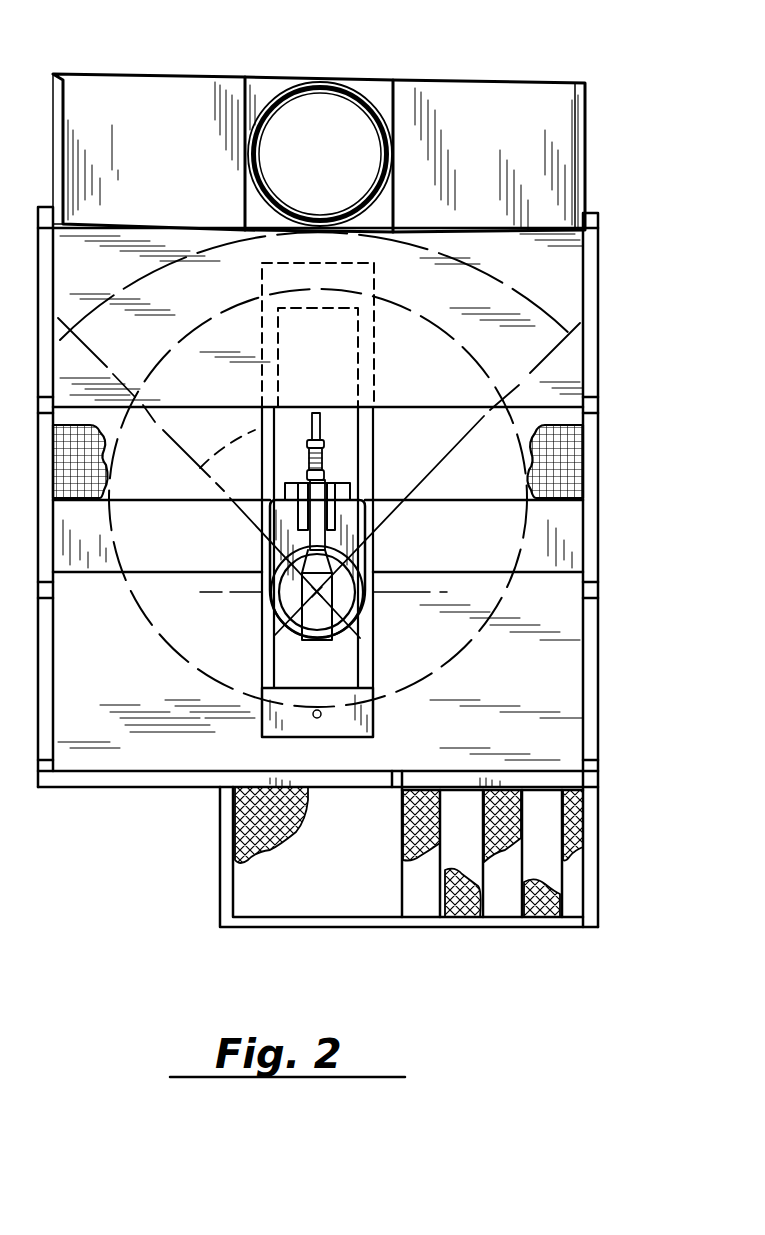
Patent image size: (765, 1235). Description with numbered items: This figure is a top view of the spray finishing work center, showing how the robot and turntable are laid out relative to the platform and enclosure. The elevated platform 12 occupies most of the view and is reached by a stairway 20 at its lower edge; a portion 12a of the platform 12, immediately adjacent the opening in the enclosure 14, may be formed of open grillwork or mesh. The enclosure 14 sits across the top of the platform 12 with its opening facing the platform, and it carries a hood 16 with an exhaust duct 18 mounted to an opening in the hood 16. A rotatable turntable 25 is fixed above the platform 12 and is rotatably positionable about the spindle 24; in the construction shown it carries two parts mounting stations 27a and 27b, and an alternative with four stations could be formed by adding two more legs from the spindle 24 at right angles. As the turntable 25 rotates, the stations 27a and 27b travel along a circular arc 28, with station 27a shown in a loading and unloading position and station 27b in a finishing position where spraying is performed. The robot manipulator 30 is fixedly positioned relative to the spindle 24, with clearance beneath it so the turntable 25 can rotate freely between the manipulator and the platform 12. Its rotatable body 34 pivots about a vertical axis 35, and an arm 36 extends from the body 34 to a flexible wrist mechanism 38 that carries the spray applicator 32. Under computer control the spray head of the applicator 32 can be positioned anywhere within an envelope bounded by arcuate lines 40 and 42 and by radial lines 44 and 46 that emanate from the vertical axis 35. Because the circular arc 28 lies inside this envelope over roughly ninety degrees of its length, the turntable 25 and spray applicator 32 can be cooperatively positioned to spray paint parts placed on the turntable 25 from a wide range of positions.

The elevated platform 12 is at (147, 722).
The portion of platform 12a is at (573, 468).
The enclosure 14 is at (612, 343).
The hood 16 is at (510, 103).
The exhaust duct 18 is at (326, 80).
The stairway 20 is at (587, 828).
The spindle 24 is at (340, 480).
The rotatable turntable 25 is at (375, 660).
The parts mounting station 27a is at (375, 727).
The parts mounting station 27b is at (375, 284).
The circular arc 28 is at (486, 651).
The robot manipulator 30 is at (372, 558).
The spray applicator 32 is at (318, 410).
The rotatable body 34 is at (378, 517).
The vertical axis 35 is at (300, 610).
The arm 36 is at (300, 538).
The flexible wrist mechanism 38 is at (305, 448).
The arcuate line 40 is at (255, 434).
The arcuate line 42 is at (527, 300).
The radial line 44 is at (200, 455).
The radial line 46 is at (495, 428).